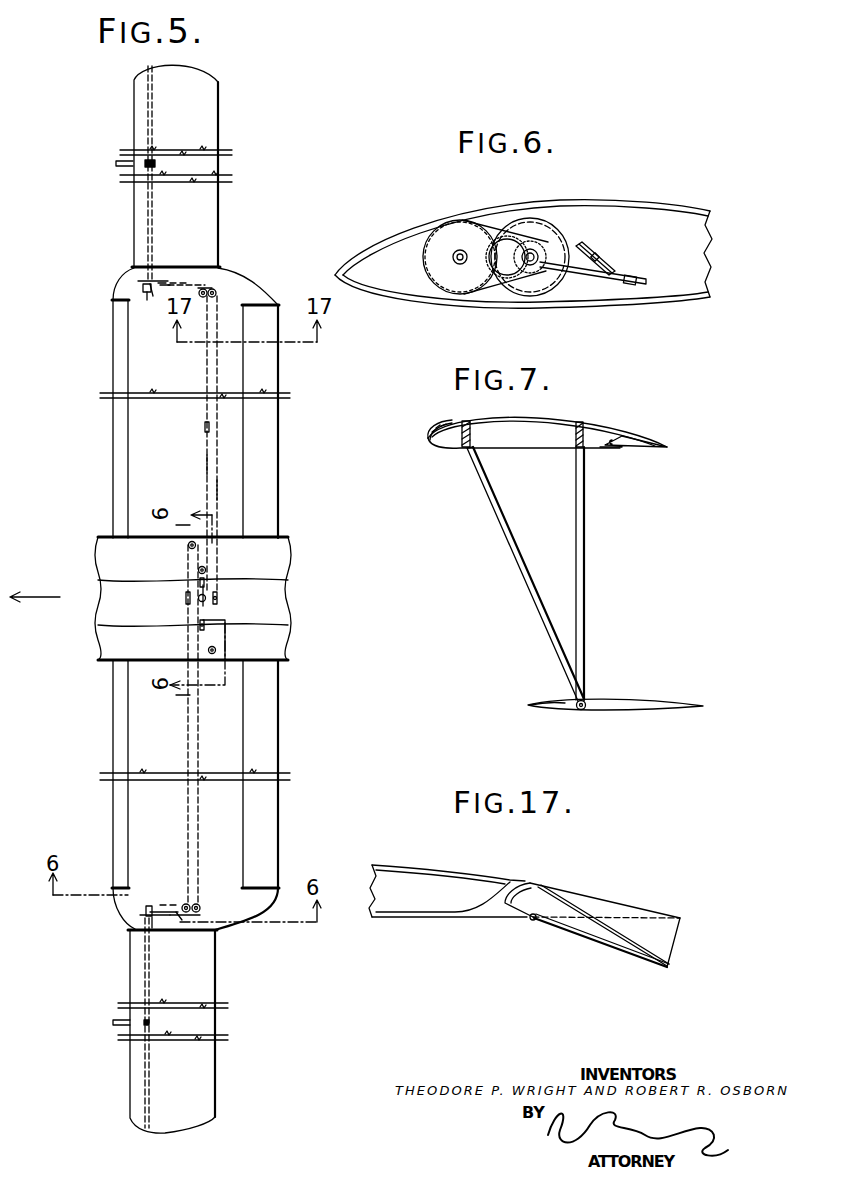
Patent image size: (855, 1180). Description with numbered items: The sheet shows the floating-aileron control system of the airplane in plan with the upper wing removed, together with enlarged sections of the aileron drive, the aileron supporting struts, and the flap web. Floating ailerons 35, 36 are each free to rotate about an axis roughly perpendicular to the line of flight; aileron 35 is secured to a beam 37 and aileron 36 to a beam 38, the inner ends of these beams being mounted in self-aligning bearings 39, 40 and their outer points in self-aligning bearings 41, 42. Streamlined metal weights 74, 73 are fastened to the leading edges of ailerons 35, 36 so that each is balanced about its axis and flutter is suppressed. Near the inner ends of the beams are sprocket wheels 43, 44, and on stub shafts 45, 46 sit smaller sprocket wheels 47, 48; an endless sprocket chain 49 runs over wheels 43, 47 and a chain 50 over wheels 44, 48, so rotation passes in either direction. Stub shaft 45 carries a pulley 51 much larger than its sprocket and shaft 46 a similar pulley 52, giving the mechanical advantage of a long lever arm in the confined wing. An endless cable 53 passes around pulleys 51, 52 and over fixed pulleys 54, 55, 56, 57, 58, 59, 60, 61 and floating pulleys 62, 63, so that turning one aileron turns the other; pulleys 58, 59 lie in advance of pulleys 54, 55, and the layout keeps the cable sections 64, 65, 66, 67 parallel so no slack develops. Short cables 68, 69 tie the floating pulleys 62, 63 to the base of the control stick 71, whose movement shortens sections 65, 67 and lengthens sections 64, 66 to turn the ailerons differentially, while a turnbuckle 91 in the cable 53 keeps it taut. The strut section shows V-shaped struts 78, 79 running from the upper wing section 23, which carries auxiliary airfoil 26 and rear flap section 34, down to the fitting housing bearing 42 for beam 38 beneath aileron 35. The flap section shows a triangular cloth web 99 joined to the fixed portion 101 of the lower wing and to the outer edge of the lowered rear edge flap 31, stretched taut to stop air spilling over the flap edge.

In FIG. 7, the upper wing section 23 is at (545, 420).
In FIG. 7, the auxiliary airfoil 26 is at (430, 432).
In FIG. 17, the rear edge flap 31 is at (607, 940).
In FIG. 7, the rear edge flap section 34 is at (640, 438).
In FIG. 5, the floating aileron 35 is at (205, 215).
In FIG. 7, the floating aileron 35 is at (648, 703).
In FIG. 5, the floating aileron 36 is at (202, 1079).
In FIG. 5, the beam 37 is at (146, 205).
In FIG. 5, the beam 38 is at (145, 985).
In FIG. 5, the self-aligning bearing 39 is at (146, 290).
In FIG. 5, the self-aligning bearing 40 is at (146, 908).
In FIG. 5, the self-aligning bearing 41 is at (148, 162).
In FIG. 5, the self-aligning bearing 42 is at (146, 1024).
In FIG. 5, the sprocket wheel 43 is at (145, 283).
In FIG. 5, the sprocket wheel 44 is at (148, 915).
In FIG. 6, the sprocket wheel 44 is at (455, 285).
In FIG. 5, the stub shaft 45 is at (149, 296).
In FIG. 5, the stub shaft 46 is at (165, 908).
In FIG. 6, the stub shaft 46 is at (540, 268).
In FIG. 5, the smaller sprocket wheel 47 is at (172, 286).
In FIG. 5, the smaller sprocket wheel 48 is at (182, 918).
In FIG. 6, the smaller sprocket wheel 48 is at (536, 252).
In FIG. 5, the endless sprocket chain 49 is at (160, 284).
In FIG. 5, the endless sprocket chain 50 is at (156, 922).
In FIG. 6, the endless sprocket chain 50 is at (514, 275).
In FIG. 5, the pulley 51 is at (152, 290).
In FIG. 5, the pulley 52 is at (190, 920).
In FIG. 6, the pulley 52 is at (534, 270).
In FIG. 5, the endless cable 53 is at (228, 438).
In FIG. 5, the fixed pulley 54 is at (216, 292).
In FIG. 5, the fixed pulley 55 is at (208, 290).
In FIG. 5, the fixed pulley 56 is at (280, 655).
In FIG. 5, the fixed pulley 57 is at (195, 543).
In FIG. 5, the fixed pulley 58 is at (200, 905).
In FIG. 6, the fixed pulley 58 is at (636, 278).
In FIG. 5, the fixed pulley 59 is at (192, 905).
In FIG. 6, the fixed pulley 59 is at (605, 270).
In FIG. 5, the fixed pulley 60 is at (210, 645).
In FIG. 5, the fixed pulley 61 is at (186, 600).
In FIG. 5, the floating pulley 62 is at (205, 570).
In FIG. 5, the floating pulley 63 is at (206, 626).
In FIG. 5, the cable section 64 is at (206, 466).
In FIG. 5, the cable section 65 is at (216, 490).
In FIG. 5, the cable section 66 is at (192, 714).
In FIG. 5, the cable section 67 is at (200, 742).
In FIG. 6, the cable section 67 is at (630, 290).
In FIG. 5, the short cable 68 is at (210, 583).
In FIG. 5, the short cable 69 is at (206, 600).
In FIG. 5, the control stick 71 is at (218, 596).
In FIG. 5, the metal weight 73 is at (118, 1024).
In FIG. 5, the metal weight 74 is at (118, 164).
In FIG. 7, the metal weight 74 is at (540, 708).
In FIG. 7, the strut 78 is at (518, 548).
In FIG. 7, the strut 79 is at (587, 525).
In FIG. 5, the turnbuckle 91 is at (205, 427).
In FIG. 17, the cloth web 99 is at (665, 942).
In FIG. 5, the fixed portion of the wing 101 is at (262, 300).
In FIG. 17, the fixed portion of the wing 101 is at (630, 905).